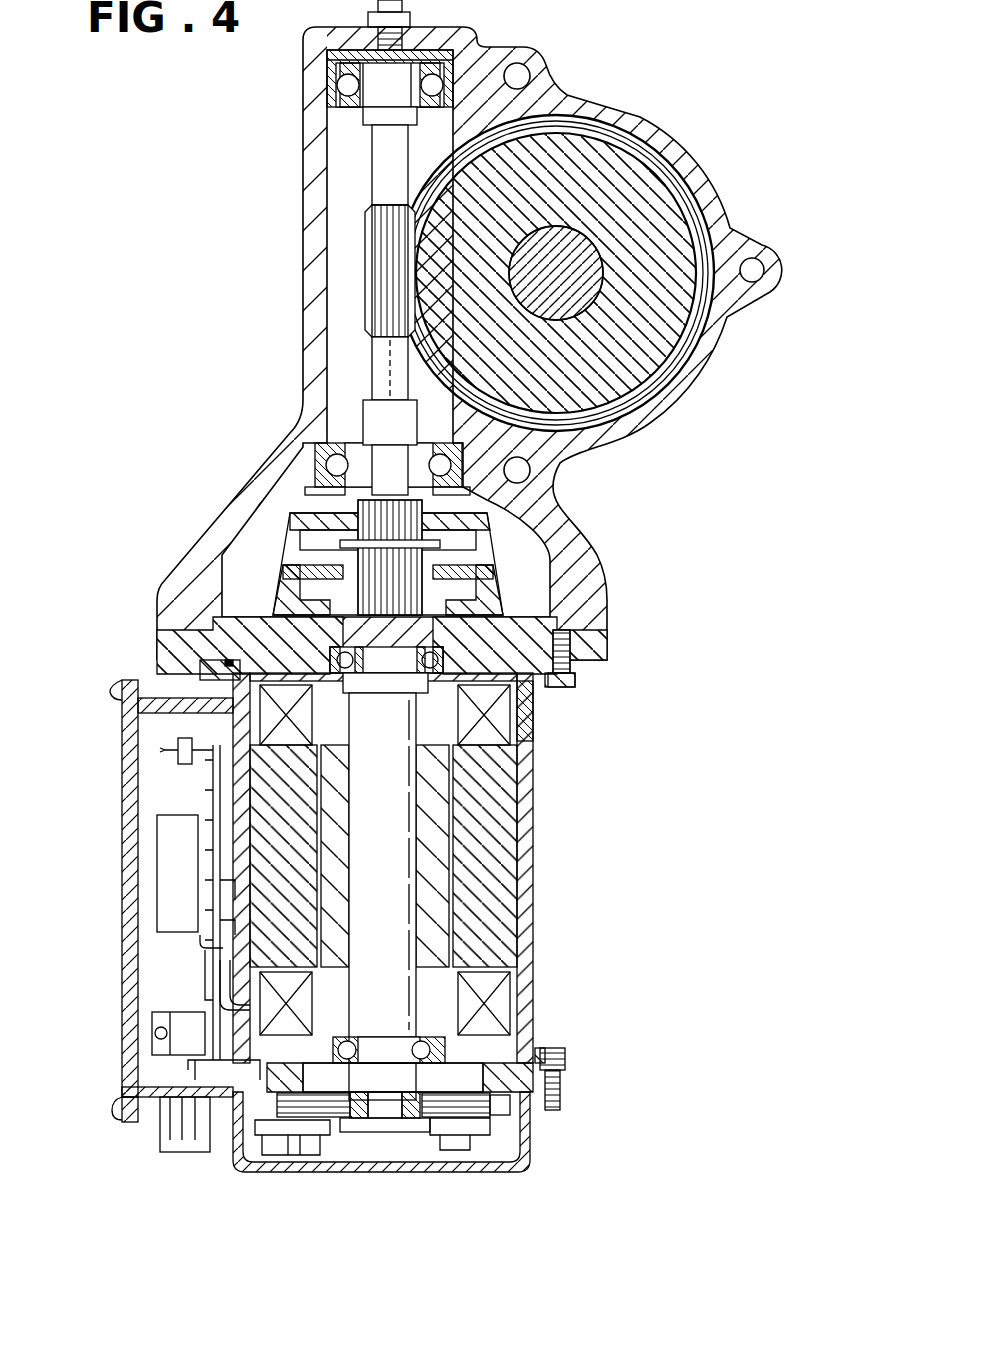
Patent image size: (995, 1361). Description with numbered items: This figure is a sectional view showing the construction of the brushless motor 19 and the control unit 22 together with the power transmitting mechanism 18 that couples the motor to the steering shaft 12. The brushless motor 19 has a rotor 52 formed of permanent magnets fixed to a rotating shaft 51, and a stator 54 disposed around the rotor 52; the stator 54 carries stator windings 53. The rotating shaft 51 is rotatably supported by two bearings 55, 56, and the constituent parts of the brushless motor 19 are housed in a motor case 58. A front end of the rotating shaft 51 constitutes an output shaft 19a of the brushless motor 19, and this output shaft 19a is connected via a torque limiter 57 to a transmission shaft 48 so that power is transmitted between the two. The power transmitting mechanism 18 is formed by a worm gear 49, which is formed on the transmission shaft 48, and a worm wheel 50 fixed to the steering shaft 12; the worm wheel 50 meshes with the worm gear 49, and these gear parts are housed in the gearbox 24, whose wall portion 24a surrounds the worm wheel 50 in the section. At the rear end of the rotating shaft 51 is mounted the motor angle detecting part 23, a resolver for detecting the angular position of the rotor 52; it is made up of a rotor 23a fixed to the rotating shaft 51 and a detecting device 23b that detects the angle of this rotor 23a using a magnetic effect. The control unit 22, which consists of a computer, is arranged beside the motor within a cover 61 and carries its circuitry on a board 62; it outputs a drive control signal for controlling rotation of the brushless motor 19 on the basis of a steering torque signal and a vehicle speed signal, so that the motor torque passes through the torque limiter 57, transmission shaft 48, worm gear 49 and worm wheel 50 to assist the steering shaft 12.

The steering shaft 12 is at (566, 297).
The power transmitting mechanism 18 is at (272, 301).
The brushless motor 19 is at (545, 752).
The output shaft 19a is at (497, 712).
The control unit 22 is at (170, 800).
The motor angle detecting part 23 is at (393, 1195).
The rotor 23a is at (410, 1135).
The detecting device 23b is at (445, 1140).
The gearbox 24 is at (489, 343).
The gear housing wall 24a is at (627, 122).
The transmission shaft 48 is at (378, 368).
The worm gear 49 is at (387, 220).
The worm wheel 50 is at (670, 329).
The rotating shaft 51 is at (390, 878).
The rotor 52 is at (487, 835).
The stator windings 53 is at (533, 717).
The stator 54 is at (495, 928).
The bearing 55 is at (330, 657).
The bearing 56 is at (447, 1047).
The torque limiter 57 is at (258, 580).
The motor case 58 is at (533, 1008).
The cover 61 is at (122, 858).
The circuit board 62 is at (210, 965).